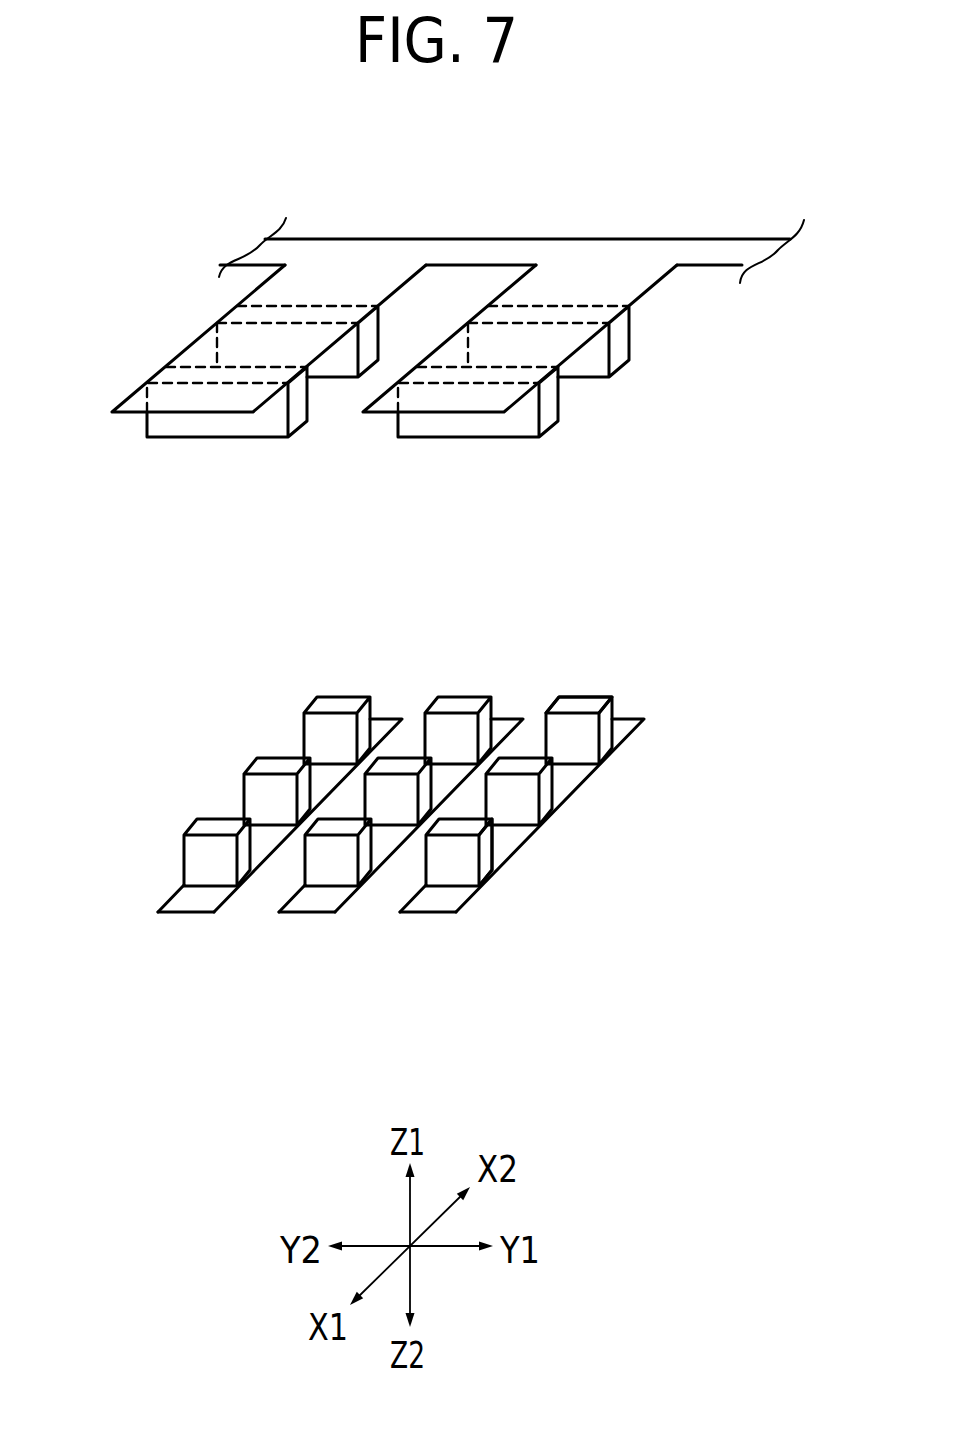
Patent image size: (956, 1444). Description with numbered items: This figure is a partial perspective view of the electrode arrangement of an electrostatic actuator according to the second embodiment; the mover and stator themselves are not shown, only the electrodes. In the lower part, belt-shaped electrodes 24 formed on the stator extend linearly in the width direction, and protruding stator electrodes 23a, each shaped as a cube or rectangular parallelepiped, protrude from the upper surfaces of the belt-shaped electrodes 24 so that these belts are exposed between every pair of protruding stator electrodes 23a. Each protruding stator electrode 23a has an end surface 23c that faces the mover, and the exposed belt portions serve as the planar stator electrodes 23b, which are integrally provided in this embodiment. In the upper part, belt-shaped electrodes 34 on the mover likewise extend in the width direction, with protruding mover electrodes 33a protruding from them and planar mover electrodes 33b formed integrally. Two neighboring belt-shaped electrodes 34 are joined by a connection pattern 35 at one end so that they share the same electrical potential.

The connection pattern 35 is at (295, 253).
The protruding mover electrode 33a is at (613, 352).
The planar mover electrode 33b is at (204, 350).
The belt-shaped electrode 34 is at (137, 403).
The protruding stator electrode 23a is at (556, 703).
The planar stator electrode 23b is at (268, 847).
The end surface 23c is at (595, 706).
The belt-shaped electrode 24 is at (428, 898).